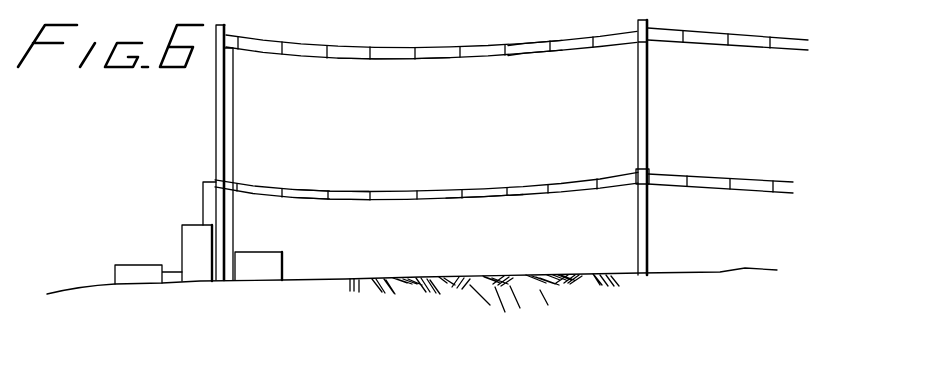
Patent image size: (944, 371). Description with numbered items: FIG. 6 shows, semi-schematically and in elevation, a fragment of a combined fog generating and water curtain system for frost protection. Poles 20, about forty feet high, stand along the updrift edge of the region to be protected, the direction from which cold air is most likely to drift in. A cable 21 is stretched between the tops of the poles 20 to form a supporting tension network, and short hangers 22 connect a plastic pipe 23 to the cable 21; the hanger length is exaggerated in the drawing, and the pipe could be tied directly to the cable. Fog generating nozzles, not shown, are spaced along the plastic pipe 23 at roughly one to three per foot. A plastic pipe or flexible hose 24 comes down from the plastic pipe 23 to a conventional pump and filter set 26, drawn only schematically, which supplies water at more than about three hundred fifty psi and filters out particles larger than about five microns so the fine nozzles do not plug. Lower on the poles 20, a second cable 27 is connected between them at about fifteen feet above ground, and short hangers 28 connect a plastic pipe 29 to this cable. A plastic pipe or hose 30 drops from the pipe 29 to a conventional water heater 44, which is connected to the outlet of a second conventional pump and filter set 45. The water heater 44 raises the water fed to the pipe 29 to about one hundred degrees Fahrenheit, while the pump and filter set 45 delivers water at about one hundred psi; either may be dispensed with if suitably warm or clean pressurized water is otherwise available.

The pole 20 is at (216, 125).
The cable 21 is at (435, 45).
The hanger 22 is at (600, 42).
The plastic pipe 23 is at (392, 60).
The plastic pipe or flexible hose 24 is at (236, 134).
The pump and filter set 26 is at (283, 262).
The second cable 27 is at (437, 190).
The hanger 28 is at (367, 192).
The plastic pipe 29 is at (473, 198).
The plastic pipe or hose 30 is at (203, 197).
The water heater 44 is at (182, 238).
The pump and filter set 45 is at (115, 268).